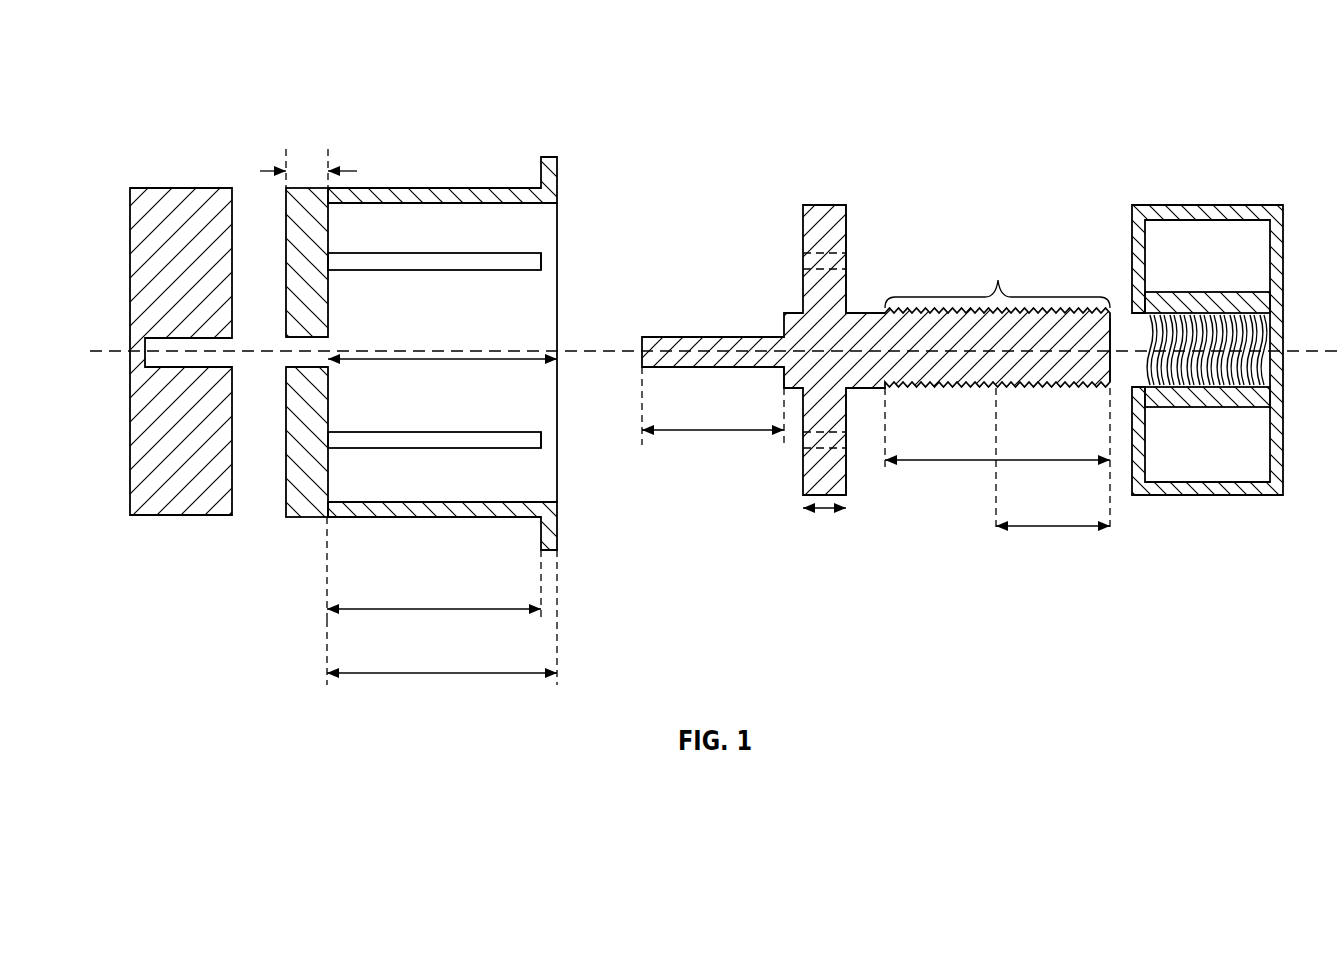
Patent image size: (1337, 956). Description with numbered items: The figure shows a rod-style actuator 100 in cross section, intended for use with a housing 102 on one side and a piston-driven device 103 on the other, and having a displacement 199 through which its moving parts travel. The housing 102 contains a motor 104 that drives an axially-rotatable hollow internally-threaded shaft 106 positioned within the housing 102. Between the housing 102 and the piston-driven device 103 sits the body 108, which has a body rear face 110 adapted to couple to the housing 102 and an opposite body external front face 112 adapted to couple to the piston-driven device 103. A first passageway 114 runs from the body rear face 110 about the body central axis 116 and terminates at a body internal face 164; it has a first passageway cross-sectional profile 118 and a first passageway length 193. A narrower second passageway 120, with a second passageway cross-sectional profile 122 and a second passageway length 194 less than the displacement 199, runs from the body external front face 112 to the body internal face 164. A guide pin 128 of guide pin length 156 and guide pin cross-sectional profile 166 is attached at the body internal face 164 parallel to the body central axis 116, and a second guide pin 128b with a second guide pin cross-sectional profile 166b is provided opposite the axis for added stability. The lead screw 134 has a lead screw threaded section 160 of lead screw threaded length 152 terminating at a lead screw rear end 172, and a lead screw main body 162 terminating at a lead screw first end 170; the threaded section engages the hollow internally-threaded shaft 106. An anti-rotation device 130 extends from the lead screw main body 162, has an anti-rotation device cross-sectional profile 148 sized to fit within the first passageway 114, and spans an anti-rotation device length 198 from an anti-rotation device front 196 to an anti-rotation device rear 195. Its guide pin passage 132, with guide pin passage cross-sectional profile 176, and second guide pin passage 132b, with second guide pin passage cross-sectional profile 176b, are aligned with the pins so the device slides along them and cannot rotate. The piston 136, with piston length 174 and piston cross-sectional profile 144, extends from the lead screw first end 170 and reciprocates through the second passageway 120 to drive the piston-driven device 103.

The rod-style actuator 100 is at (999, 70).
The housing 102 is at (1167, 490).
The piston-driven device 103 is at (148, 505).
The motor 104 is at (1258, 463).
The axially-rotatable hollow internally-threaded shaft 106 is at (1212, 317).
The body 108 is at (440, 397).
The body rear face 110 is at (558, 215).
The body external front face 112 is at (287, 495).
The first passageway 114 is at (543, 478).
The body central axis 116 is at (380, 350).
The first passageway cross-sectional profile 118 is at (542, 300).
The second passageway 120 is at (285, 363).
The second passageway cross-sectional profile 122 is at (285, 345).
The guide pin 128 is at (543, 440).
The second guide pin 128b is at (542, 258).
The anti-rotation device 130 is at (825, 205).
The guide pin passage 132 is at (802, 438).
The second guide pin passage 132b is at (803, 258).
The lead screw 134 is at (1043, 388).
The piston 136 is at (636, 343).
The piston cross-sectional profile 144 is at (640, 343).
The anti-rotation device cross-sectional profile 148 is at (847, 219).
The lead screw threaded length 152 is at (1014, 462).
The guide pin length 156 is at (378, 607).
The lead screw threaded section 160 is at (997, 280).
The lead screw main body 162 is at (857, 312).
The body internal face 164 is at (330, 242).
The guide pin cross-sectional profile 166 is at (457, 432).
The second guide pin cross-sectional profile 166b is at (442, 272).
The lead screw first end 170 is at (783, 382).
The lead screw rear end 172 is at (1113, 338).
The piston length 174 is at (688, 433).
The guide pin passage cross-sectional profile 176 is at (845, 445).
The second guide pin passage cross-sectional profile 176b is at (833, 260).
The first passageway length 193 is at (398, 672).
The second passageway length 194 is at (343, 171).
The anti-rotation device rear 195 is at (847, 477).
The anti-rotation device front 196 is at (802, 477).
The anti-rotation device length 198 is at (823, 512).
The displacement 199 is at (1030, 528).